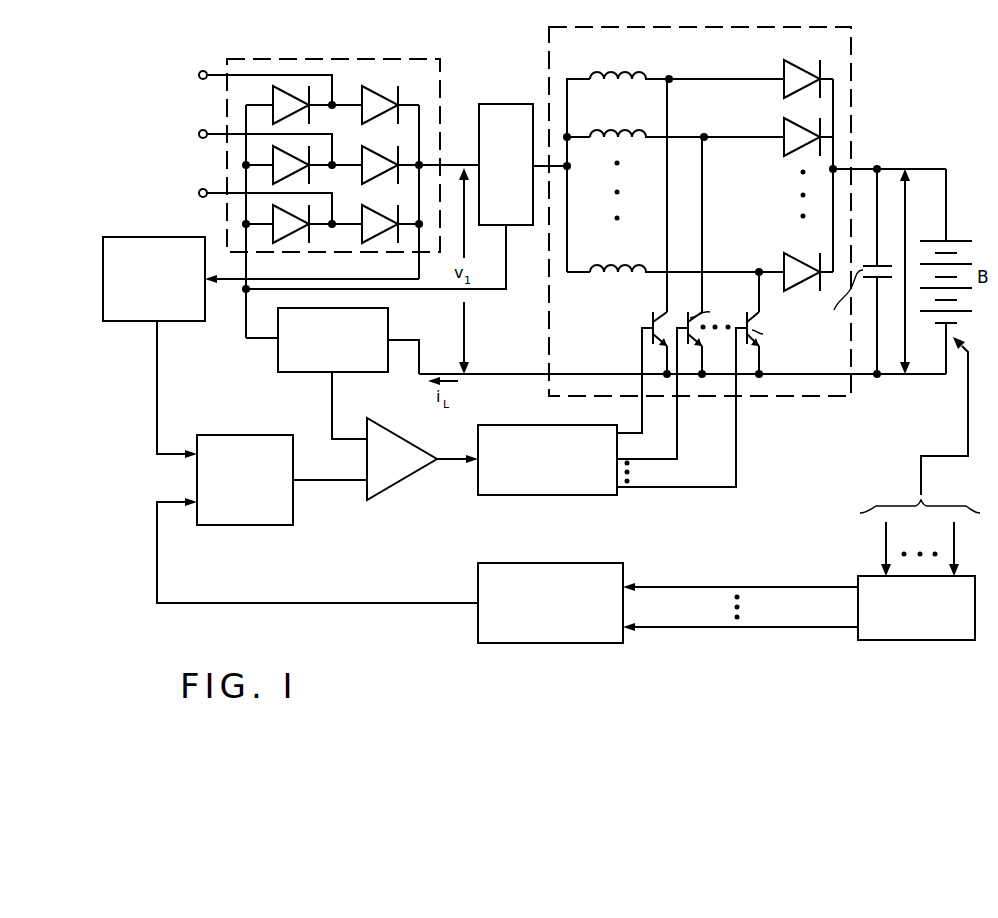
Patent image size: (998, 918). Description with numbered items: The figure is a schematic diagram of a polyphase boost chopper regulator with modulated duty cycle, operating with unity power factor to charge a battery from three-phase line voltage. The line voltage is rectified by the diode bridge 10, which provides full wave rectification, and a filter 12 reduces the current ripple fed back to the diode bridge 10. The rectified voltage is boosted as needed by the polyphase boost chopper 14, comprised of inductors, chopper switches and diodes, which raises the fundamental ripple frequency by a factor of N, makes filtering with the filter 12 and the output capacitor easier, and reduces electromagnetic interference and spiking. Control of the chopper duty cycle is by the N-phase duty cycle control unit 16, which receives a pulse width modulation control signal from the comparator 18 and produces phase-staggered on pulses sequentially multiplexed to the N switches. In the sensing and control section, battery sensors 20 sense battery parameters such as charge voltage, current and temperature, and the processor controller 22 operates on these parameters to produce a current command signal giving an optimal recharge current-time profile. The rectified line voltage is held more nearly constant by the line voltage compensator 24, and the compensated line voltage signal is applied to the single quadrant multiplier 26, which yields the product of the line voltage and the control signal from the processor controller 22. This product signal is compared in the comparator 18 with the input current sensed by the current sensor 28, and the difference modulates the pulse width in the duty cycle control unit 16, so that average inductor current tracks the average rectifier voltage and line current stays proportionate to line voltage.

The diode bridge 10 is at (393, 59).
The filter 12 is at (505, 104).
The polyphase boost chopper 14 is at (852, 63).
The duty cycle control unit 16 is at (548, 496).
The comparator 18 is at (403, 472).
The battery sensors 20 is at (912, 641).
The processor controller 22 is at (620, 563).
The line voltage compensator 24 is at (125, 322).
The single quadrant multiplier 26 is at (268, 525).
The current sensor 28 is at (388, 313).